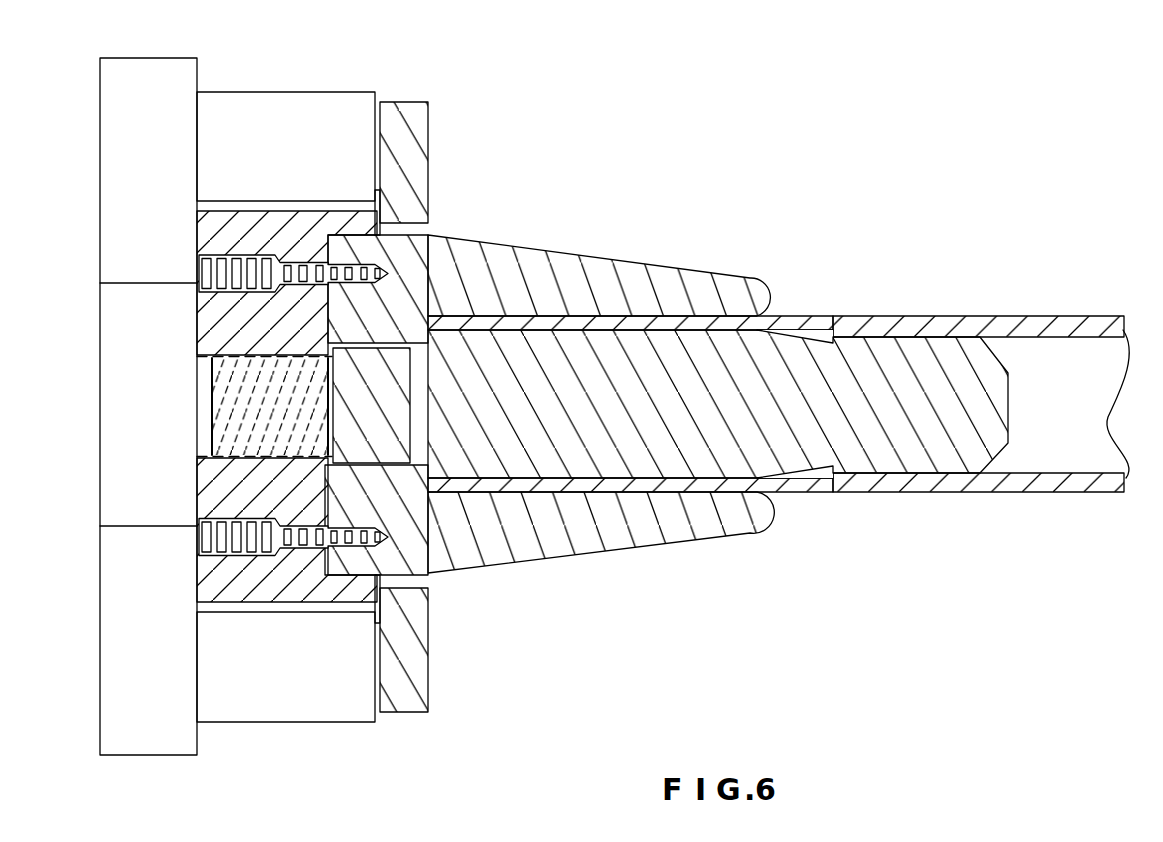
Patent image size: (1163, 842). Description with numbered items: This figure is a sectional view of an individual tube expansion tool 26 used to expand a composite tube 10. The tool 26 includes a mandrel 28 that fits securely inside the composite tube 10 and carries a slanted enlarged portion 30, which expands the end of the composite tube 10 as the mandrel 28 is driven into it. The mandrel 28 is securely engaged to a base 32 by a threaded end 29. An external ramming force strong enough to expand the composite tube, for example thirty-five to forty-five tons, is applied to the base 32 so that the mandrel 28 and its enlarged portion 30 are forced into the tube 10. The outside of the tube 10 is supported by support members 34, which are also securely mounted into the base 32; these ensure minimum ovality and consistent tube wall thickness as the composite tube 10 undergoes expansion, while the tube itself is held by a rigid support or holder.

The composite tube 10 is at (778, 368).
The individual tube expansion tool 26 is at (542, 172).
The mandrel 28 is at (1006, 366).
The threaded end 29 is at (222, 356).
The slanted enlarged portion 30 is at (793, 316).
The base 32 is at (214, 92).
The support members 34 is at (624, 259).